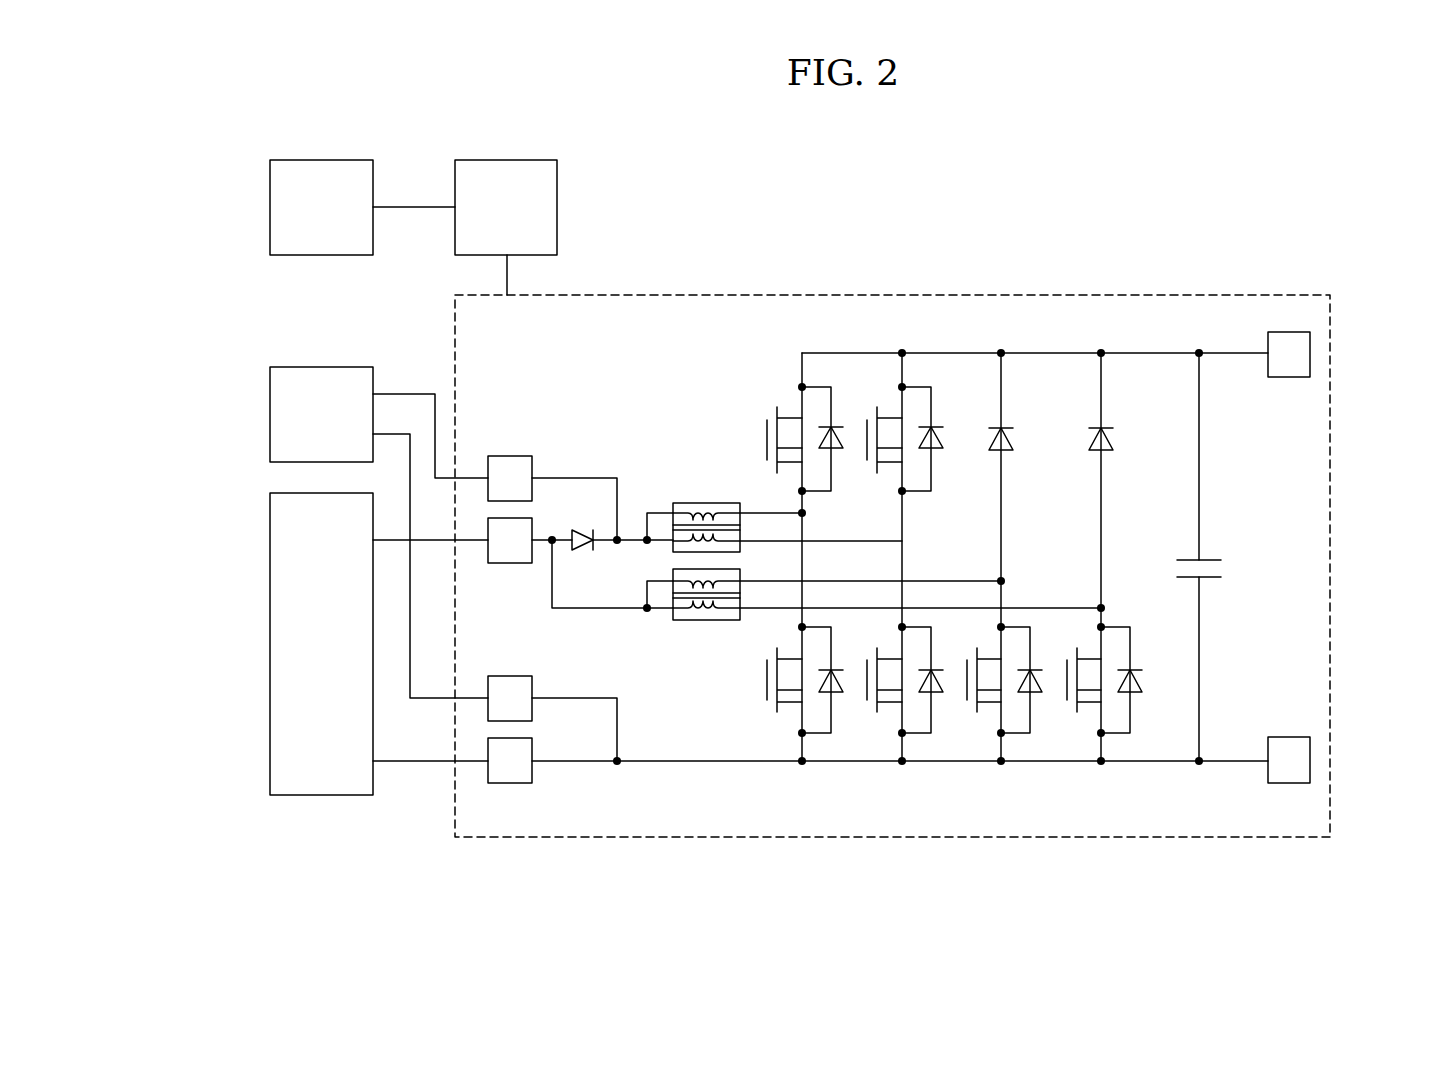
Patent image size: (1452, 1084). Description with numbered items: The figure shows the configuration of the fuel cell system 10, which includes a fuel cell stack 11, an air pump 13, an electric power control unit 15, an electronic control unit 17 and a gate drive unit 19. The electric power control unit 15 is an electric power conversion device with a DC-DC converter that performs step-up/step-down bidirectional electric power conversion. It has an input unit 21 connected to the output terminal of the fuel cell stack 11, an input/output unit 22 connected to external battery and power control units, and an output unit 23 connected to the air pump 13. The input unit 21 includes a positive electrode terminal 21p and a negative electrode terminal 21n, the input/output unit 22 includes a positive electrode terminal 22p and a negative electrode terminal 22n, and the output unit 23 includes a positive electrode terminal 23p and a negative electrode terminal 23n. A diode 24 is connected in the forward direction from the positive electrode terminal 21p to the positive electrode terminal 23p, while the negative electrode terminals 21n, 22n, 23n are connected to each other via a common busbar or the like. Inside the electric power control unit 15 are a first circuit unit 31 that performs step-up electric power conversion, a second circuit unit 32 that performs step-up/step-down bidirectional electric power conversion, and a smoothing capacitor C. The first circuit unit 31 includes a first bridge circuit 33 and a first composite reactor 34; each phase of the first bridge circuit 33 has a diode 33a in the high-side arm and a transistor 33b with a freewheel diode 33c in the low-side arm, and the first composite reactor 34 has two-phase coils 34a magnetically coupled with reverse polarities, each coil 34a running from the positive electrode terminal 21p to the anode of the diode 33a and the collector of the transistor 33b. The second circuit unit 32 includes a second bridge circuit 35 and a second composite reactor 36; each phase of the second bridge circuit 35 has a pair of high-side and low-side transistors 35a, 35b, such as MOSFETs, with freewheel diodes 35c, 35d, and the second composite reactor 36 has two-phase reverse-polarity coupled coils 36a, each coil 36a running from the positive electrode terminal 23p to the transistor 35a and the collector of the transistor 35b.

The fuel cell system 10 is at (1288, 180).
The fuel cell stack 11 is at (270, 630).
The air pump 13 is at (270, 413).
The electric power control unit 15 is at (1158, 295).
The electronic control unit 17 is at (322, 160).
The gate drive unit 19 is at (497, 160).
The input unit 21 is at (550, 649).
The positive electrode terminal (P1) 21p is at (532, 518).
The negative electrode terminal (N1) 21n is at (505, 783).
The input/output unit 22 is at (1300, 509).
The positive electrode terminal (P2) 22p is at (1289, 332).
The negative electrode terminal (N2) 22n is at (1290, 737).
The output unit 23 is at (534, 542).
The positive electrode terminal (P3) 23p is at (500, 456).
The negative electrode terminal (N3) 23n is at (512, 676).
The diode 24 is at (585, 548).
The first circuit unit 31 is at (665, 895).
The second circuit unit 32 is at (617, 228).
The first bridge circuit 33 is at (1020, 810).
The diode 33a is at (1005, 428).
The transistor 33b is at (977, 712).
The freewheel diode 33c is at (1030, 692).
The first composite reactor 34 is at (668, 665).
The coils 34a is at (730, 620).
The second bridge circuit 35 is at (806, 350).
The high-side arm transistor 35a is at (777, 407).
The low-side arm transistor 35b is at (777, 712).
The freewheel diode 35c is at (831, 427).
The freewheel diode 35d is at (831, 692).
The second composite reactor 36 is at (690, 470).
The coils 36a is at (703, 503).
The smoothing capacitor C is at (1205, 560).